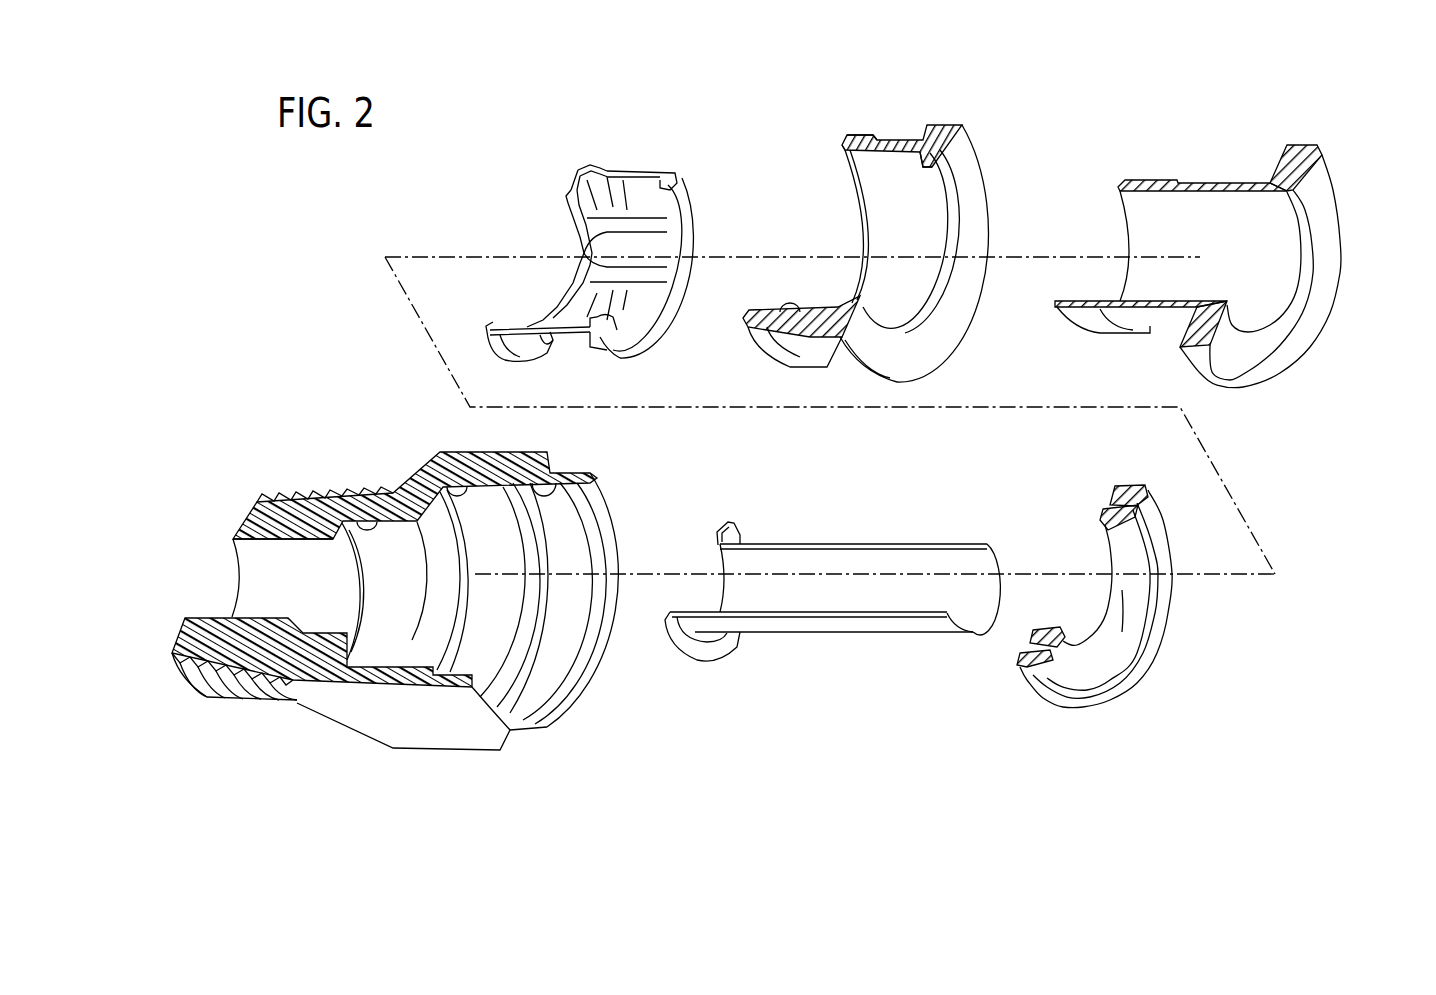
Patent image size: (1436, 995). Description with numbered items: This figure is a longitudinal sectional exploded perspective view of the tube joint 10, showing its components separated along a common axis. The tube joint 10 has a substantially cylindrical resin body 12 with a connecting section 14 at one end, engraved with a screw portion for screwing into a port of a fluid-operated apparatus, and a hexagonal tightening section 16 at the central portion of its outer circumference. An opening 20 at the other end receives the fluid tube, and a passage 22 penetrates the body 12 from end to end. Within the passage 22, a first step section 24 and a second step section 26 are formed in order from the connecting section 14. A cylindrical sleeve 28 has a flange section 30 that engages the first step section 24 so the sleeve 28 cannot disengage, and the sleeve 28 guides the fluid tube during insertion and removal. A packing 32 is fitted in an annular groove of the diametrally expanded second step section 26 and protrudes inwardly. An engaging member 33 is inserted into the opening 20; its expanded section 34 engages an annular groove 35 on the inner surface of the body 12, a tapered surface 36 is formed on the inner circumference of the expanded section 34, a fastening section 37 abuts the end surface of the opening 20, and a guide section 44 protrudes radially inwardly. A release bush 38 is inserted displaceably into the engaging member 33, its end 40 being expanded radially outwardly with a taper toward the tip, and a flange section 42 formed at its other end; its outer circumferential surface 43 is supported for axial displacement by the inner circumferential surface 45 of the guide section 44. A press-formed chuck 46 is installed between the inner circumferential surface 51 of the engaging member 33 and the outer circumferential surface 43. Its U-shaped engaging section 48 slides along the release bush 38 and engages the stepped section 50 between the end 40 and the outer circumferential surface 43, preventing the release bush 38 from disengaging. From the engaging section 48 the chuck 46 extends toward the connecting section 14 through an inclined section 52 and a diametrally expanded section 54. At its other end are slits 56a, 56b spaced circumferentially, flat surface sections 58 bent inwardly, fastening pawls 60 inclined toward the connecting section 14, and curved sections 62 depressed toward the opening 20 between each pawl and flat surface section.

The tube joint 10 is at (1272, 89).
The body 12 is at (596, 683).
The connecting section 14 is at (210, 698).
The tightening section 16 is at (419, 735).
The opening 20 is at (572, 505).
The passage 22 is at (270, 560).
The first step section 24 is at (357, 500).
The second step section 26 is at (453, 470).
The sleeve 28 is at (812, 622).
The flange section 30 is at (705, 655).
The packing 32 is at (1087, 692).
The engaging member 33 is at (978, 147).
The expanded section 34 is at (856, 133).
The annular groove 35 is at (560, 468).
The tapered surface 36 is at (842, 147).
The fastening section 37 is at (930, 125).
The release bush 38 is at (1347, 266).
The end 40 is at (1130, 194).
The flange section 42 is at (1303, 143).
The outer circumferential surface 43 is at (1167, 320).
The guide section 44 is at (928, 168).
The inner circumferential surface 45 is at (850, 285).
The chuck 46 is at (686, 182).
The engaging section 48 is at (605, 325).
The stepped section 50 is at (1137, 337).
The inner circumferential surface 51 is at (797, 312).
The inclined section 52 is at (610, 172).
The diametrally expanded section 54 is at (598, 166).
The slit 56a is at (580, 251).
The slit 56b is at (540, 318).
The flat surface section 58 is at (574, 176).
The fastening pawl 60 is at (570, 210).
The curved section 62 is at (565, 194).